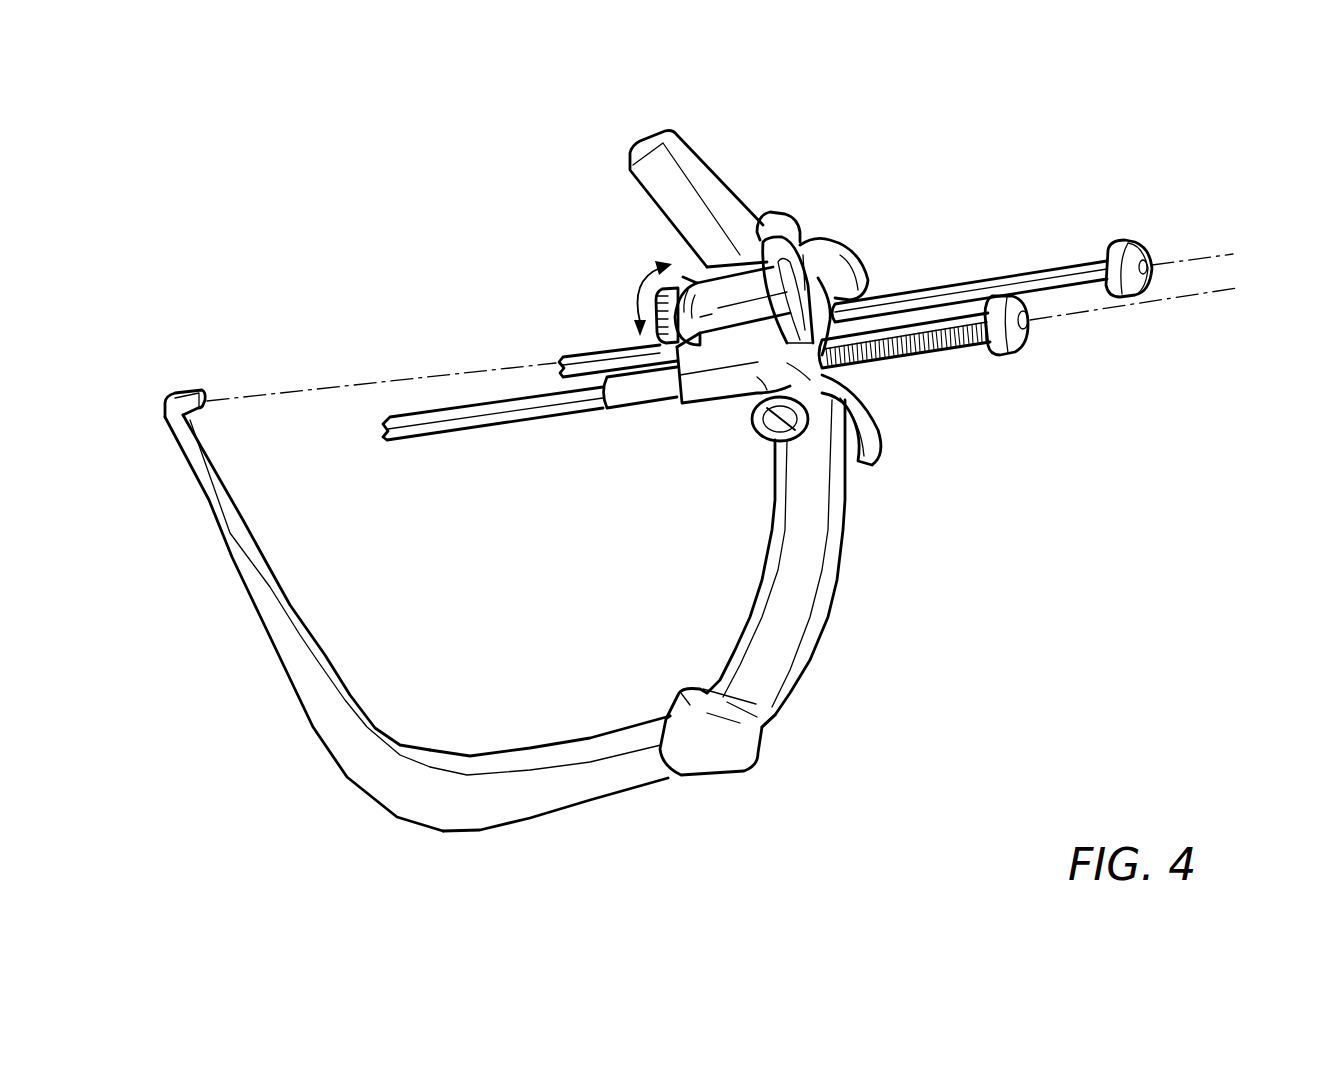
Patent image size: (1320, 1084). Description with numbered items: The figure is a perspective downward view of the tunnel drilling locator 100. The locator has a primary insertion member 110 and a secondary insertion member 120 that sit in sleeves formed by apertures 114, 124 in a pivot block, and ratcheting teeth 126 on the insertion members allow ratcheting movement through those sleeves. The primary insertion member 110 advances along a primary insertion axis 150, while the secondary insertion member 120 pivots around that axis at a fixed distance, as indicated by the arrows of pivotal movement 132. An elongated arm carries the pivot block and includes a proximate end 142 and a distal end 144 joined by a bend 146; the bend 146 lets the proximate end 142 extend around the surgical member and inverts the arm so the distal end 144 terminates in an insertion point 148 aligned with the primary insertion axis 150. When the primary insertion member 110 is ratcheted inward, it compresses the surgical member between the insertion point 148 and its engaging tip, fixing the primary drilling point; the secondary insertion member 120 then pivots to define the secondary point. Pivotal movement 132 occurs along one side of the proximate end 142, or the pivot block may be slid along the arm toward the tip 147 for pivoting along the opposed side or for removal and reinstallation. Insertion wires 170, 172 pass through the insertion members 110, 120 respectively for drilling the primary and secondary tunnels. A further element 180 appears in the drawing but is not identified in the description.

The tunnel drilling locator 100 is at (938, 684).
The primary insertion member 110 is at (1006, 277).
The aperture 114 is at (866, 300).
The secondary insertion member 120 is at (633, 393).
The aperture 124 is at (855, 365).
The ratcheting teeth 126 is at (1053, 290).
The arrows of pivotal movement 132 is at (642, 302).
The proximate end 142 is at (559, 589).
The distal end 144 is at (260, 623).
The bend 146 is at (400, 820).
The tip 147 is at (636, 152).
The insertion point 148 is at (210, 398).
The primary insertion axis 150 is at (385, 384).
The insertion wire 170 is at (1190, 253).
The insertion wire 172 is at (1192, 298).
The clamp body 180 is at (737, 262).